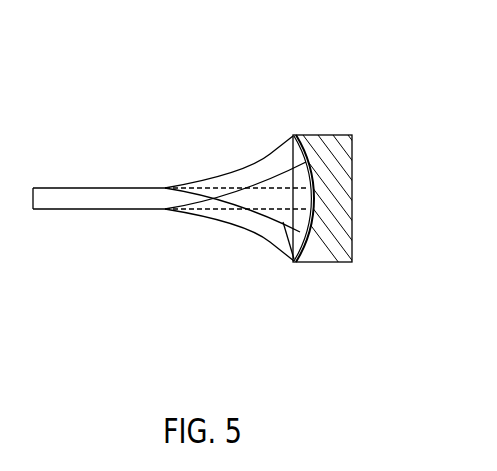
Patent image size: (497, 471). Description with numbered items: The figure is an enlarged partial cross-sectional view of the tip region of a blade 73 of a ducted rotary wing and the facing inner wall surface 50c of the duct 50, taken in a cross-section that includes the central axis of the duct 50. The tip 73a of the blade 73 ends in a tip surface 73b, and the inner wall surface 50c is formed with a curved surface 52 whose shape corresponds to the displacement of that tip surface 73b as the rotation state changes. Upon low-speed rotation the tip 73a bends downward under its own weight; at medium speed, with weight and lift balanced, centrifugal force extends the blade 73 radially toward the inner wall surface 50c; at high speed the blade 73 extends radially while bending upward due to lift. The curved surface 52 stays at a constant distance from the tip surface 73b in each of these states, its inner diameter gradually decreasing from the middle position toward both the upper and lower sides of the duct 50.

The blade 73 is at (82, 188).
The tip 73a is at (258, 160).
The tip surface 73b is at (308, 148).
The duct 50 is at (340, 226).
The inner wall surface 50c is at (315, 161).
The curved surface 52 is at (303, 238).